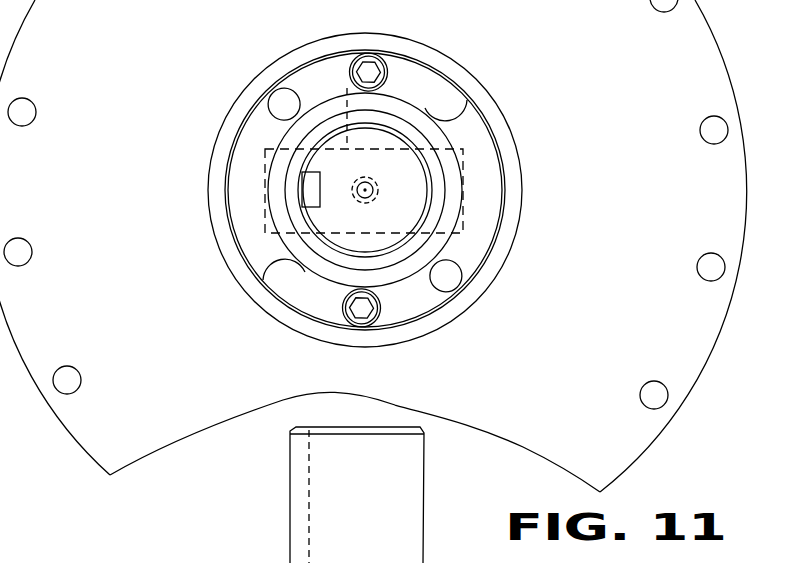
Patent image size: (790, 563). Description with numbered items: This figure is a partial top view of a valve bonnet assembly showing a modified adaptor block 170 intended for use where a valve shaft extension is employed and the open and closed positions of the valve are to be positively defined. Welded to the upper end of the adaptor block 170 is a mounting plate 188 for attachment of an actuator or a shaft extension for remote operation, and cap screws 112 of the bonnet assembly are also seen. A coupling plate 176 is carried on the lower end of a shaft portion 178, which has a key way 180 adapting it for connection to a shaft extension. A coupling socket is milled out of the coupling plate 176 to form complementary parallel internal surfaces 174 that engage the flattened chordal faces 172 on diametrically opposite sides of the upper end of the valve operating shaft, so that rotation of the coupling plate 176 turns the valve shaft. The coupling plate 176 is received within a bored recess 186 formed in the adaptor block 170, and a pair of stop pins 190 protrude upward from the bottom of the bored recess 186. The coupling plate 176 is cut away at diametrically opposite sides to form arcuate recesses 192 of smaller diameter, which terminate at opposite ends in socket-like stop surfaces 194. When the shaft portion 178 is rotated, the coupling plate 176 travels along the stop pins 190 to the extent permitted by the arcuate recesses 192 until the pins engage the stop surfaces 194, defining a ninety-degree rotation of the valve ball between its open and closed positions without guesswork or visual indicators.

The cap screws 112 is at (370, 318).
The adaptor block 170 is at (418, 75).
The flattened chordal faces 172 is at (345, 88).
The parallel internal surfaces 174 is at (463, 222).
The coupling plate 176 is at (483, 155).
The shaft portion 178 is at (418, 181).
The key way 180 is at (320, 196).
The bored recess 186 is at (306, 312).
The mounting plate 188 is at (607, 298).
The stop pins 190 is at (288, 92).
The arcuate recesses 192 is at (300, 297).
The stop surfaces 194 is at (458, 96).